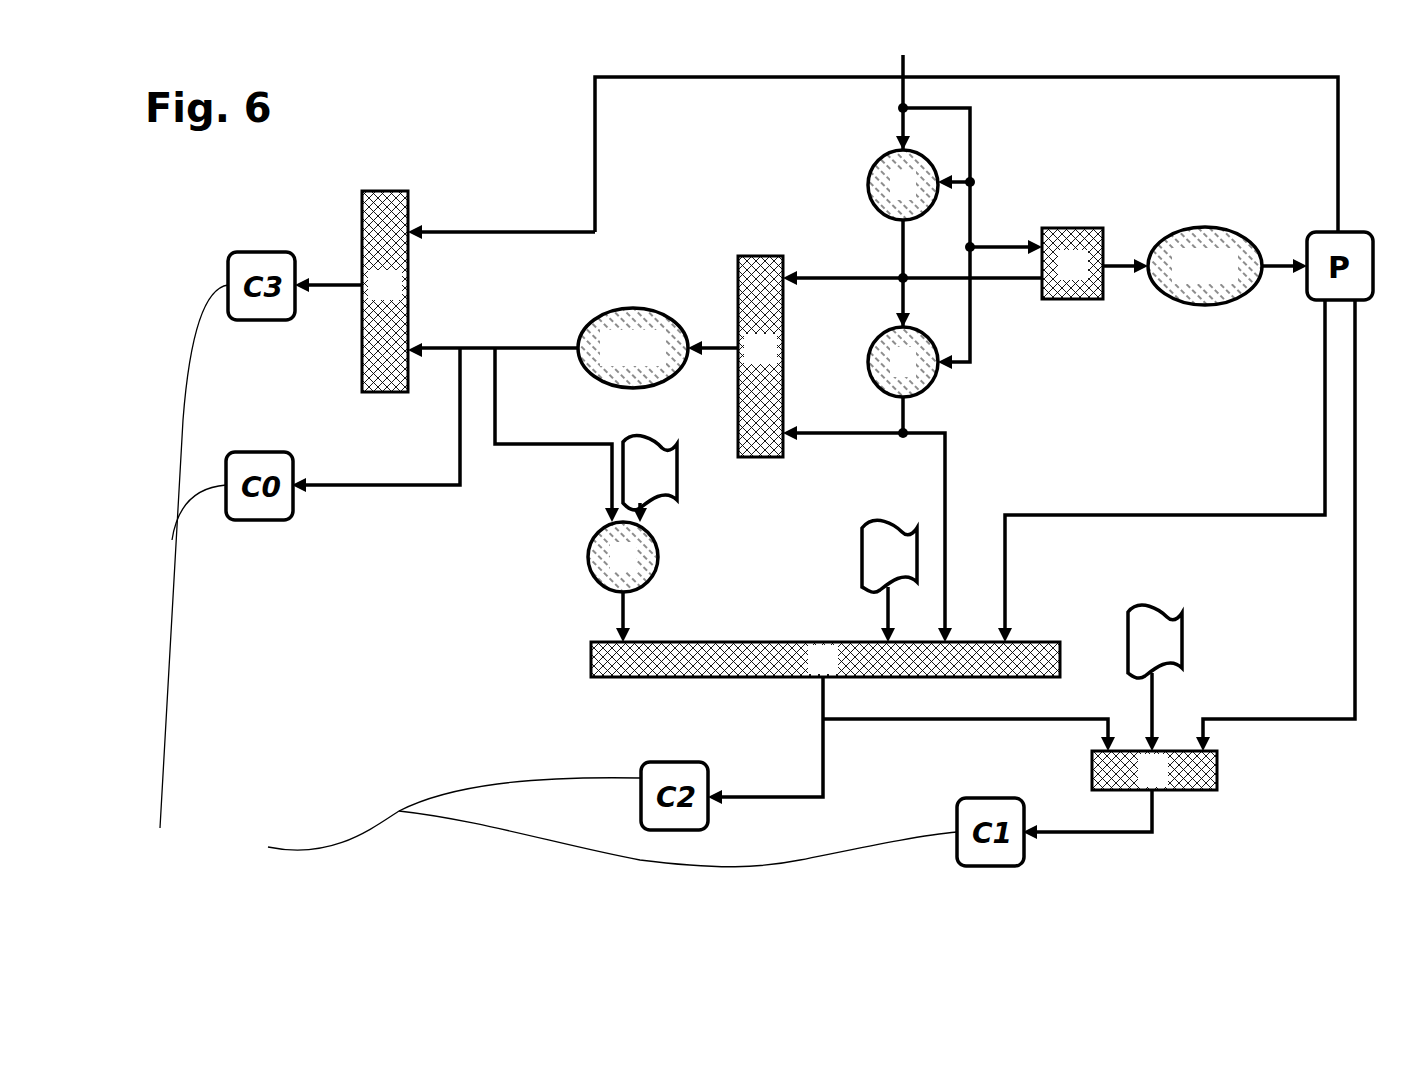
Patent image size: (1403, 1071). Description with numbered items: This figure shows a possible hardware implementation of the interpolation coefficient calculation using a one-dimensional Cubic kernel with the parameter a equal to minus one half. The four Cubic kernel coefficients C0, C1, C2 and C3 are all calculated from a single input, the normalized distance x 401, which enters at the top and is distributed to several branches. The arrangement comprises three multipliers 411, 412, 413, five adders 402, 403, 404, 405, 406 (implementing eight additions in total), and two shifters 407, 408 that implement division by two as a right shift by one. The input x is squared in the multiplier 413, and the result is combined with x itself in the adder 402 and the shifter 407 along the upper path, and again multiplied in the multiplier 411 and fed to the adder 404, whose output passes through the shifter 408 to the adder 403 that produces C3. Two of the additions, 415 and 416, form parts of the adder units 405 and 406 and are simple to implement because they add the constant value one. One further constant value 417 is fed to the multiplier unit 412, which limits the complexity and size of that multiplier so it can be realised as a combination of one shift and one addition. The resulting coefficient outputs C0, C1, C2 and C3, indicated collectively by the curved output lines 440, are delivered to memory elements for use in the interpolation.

The normalized distance x 401 is at (918, 38).
The adder 402 is at (1080, 300).
The adder 403 is at (392, 191).
The adder 404 is at (760, 256).
The adder unit 405 is at (591, 655).
The adder unit 406 is at (1092, 772).
The shifter 407 is at (1180, 228).
The shifter 408 is at (660, 310).
The multiplier 411 is at (868, 368).
The multiplier unit 412 is at (587, 563).
The multiplier 413 is at (868, 193).
The addition with constant value 1 415 is at (1128, 632).
The addition with constant value 1 416 is at (870, 520).
The constant value 417 is at (678, 470).
The output coefficients C0-C3 440 is at (558, 576).